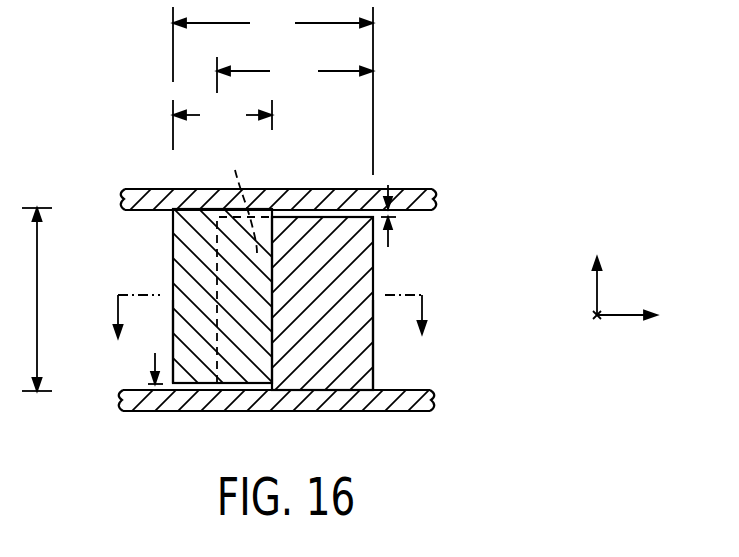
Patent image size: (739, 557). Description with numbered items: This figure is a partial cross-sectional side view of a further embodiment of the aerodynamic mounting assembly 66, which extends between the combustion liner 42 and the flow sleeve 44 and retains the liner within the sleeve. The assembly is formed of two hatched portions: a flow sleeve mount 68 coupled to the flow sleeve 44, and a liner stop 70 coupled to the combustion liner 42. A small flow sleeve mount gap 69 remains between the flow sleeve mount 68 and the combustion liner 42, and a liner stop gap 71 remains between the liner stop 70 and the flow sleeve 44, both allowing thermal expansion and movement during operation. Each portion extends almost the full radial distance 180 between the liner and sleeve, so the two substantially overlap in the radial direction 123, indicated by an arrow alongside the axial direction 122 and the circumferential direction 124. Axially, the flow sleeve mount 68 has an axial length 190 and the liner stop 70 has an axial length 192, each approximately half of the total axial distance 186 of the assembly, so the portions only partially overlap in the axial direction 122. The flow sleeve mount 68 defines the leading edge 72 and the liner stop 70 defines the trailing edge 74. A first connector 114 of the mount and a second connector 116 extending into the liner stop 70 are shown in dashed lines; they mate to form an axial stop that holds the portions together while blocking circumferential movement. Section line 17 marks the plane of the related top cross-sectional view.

The section line 17 is at (274, 333).
The combustion liner 42 is at (271, 412).
The flow sleeve 44 is at (302, 190).
The aerodynamic mounting assembly 66 is at (382, 365).
The flow sleeve mount 68 is at (376, 290).
The flow sleeve mount gap 69 is at (388, 186).
The liner stop 70 is at (172, 330).
The liner stop gap 71 is at (155, 405).
The leading edge 72 is at (382, 265).
The trailing edge 74 is at (168, 257).
The first connector 114 is at (215, 253).
The second connector 116 is at (237, 198).
The axial direction 122 is at (618, 316).
The radial direction 123 is at (598, 289).
The circumferential direction 124 is at (594, 316).
The radial distance 180 is at (37, 299).
The axial distance 186 is at (273, 91).
The axial length 190 is at (295, 75).
The axial length 192 is at (222, 115).